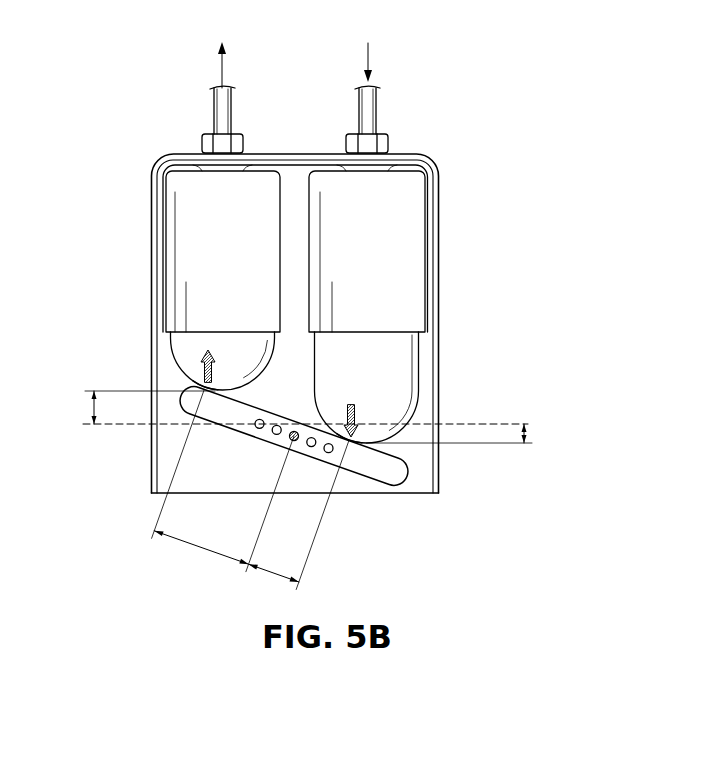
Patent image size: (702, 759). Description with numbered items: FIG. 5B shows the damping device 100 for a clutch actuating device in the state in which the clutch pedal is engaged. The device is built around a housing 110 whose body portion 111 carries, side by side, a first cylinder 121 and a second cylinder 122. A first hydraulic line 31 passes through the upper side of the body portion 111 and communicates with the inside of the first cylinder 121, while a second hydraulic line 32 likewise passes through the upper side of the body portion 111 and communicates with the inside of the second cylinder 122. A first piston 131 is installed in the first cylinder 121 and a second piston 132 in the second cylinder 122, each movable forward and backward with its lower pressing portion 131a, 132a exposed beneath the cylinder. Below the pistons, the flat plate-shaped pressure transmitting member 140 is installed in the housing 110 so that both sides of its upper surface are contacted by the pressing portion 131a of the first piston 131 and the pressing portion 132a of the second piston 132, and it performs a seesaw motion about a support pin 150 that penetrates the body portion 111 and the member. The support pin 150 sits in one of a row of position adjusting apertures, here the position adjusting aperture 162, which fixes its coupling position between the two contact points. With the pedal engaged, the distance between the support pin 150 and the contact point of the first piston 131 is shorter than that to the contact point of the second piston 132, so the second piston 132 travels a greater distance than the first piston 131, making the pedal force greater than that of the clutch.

The damping device 100 is at (131, 158).
The housing 110 is at (460, 156).
The body portion 111 is at (437, 229).
The pressure transmitting member 140 is at (406, 494).
The first hydraulic line 31 is at (372, 111).
The second hydraulic line 32 is at (218, 113).
The first cylinder 121 is at (410, 286).
The second cylinder 122 is at (178, 248).
The first piston 131 is at (405, 361).
The pressing portion 131a is at (400, 455).
The second piston 132 is at (178, 353).
The pressing portion 132a is at (188, 386).
The support pin 150 is at (251, 468).
The position adjusting aperture 162 is at (297, 441).